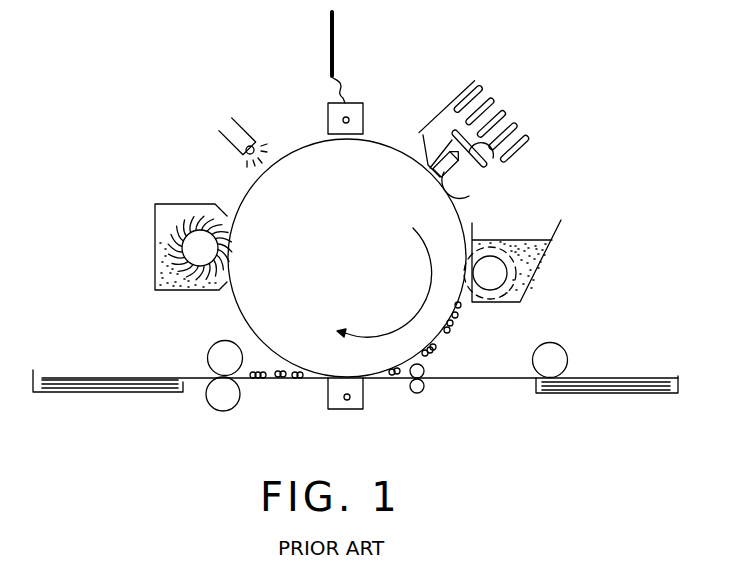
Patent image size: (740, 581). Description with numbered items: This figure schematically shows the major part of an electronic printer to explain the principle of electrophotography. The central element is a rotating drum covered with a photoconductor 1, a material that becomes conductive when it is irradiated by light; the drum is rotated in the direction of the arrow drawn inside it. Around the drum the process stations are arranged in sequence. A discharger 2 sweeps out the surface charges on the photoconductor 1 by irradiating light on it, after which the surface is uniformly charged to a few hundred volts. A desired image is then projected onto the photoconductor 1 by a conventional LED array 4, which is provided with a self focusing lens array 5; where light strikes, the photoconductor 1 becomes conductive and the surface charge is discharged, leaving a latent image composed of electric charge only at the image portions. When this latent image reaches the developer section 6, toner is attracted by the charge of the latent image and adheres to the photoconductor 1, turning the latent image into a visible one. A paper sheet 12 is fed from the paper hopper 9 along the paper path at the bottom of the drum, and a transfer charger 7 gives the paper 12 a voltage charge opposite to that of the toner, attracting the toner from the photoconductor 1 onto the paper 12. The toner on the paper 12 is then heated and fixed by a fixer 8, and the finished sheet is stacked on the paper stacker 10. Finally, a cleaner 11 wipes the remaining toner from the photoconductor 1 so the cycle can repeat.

The photoconductor 1 is at (382, 143).
The discharger 2 is at (225, 147).
The LED array 4 is at (507, 152).
The self focusing lens array 5 is at (445, 187).
The developer section 6 is at (538, 302).
The transfer charger 7 is at (377, 409).
The fixer 8 is at (240, 399).
The paper hopper 9 is at (628, 378).
The paper stacker 10 is at (123, 376).
The cleaner 11 is at (155, 272).
The paper sheet 12 is at (473, 380).